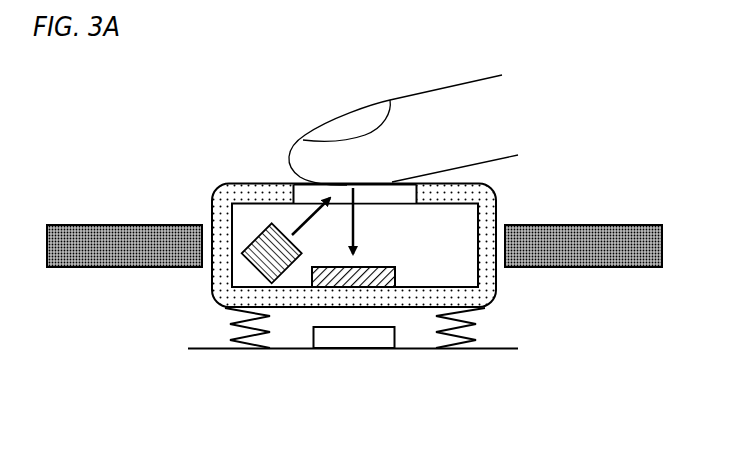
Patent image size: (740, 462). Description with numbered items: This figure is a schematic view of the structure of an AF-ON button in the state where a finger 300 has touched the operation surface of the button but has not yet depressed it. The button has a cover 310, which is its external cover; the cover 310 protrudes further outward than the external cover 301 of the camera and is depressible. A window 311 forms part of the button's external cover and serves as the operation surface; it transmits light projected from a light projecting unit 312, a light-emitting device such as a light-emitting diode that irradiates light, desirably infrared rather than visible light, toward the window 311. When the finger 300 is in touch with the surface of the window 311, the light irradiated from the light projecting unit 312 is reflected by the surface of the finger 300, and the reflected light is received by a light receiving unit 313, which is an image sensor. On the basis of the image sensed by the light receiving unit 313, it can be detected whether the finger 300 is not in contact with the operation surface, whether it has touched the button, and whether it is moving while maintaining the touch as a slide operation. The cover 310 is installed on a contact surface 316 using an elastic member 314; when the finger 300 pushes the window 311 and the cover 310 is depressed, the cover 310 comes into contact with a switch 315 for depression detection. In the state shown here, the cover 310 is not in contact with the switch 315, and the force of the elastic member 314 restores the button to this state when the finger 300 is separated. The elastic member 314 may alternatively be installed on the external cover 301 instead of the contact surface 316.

The finger 300 is at (477, 108).
The external cover 301 is at (98, 240).
The cover 310 is at (488, 208).
The window 311 is at (390, 195).
The light projecting unit 312 is at (260, 270).
The light receiving unit 313 is at (378, 280).
The elastic member 314 is at (475, 323).
The switch 315 is at (353, 338).
The contact surface 316 is at (212, 350).